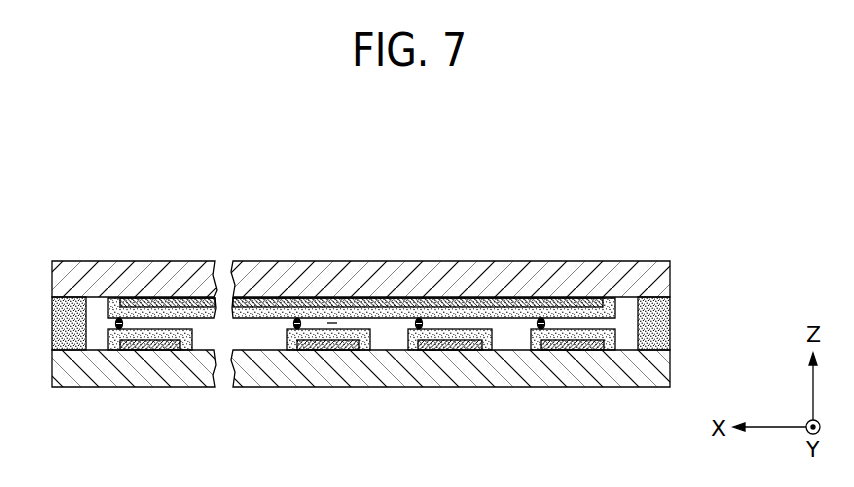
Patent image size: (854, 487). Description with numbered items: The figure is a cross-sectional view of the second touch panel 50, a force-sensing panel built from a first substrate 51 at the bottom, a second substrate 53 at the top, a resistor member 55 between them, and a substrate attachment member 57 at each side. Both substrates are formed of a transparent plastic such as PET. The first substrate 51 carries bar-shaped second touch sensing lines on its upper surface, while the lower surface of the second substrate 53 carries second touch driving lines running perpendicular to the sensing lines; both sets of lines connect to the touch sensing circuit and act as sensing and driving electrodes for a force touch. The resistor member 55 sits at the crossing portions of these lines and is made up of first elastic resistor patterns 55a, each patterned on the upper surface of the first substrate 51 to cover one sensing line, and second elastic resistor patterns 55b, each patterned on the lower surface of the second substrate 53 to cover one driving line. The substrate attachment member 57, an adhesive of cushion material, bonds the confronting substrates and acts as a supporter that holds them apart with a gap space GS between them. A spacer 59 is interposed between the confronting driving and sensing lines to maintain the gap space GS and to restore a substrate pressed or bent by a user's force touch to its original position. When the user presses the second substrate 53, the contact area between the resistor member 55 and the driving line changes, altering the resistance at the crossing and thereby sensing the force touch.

The second touch panel 50 is at (48, 157).
The first substrate 51 is at (663, 370).
The second substrate 53 is at (663, 283).
The resistor member 55 is at (205, 193).
The first elastic resistor patterns 55a is at (361, 326).
The second elastic resistor patterns 55b is at (361, 260).
The substrate attachment member 57 is at (668, 318).
The spacer 59 is at (546, 322).
The gap space GS is at (332, 322).